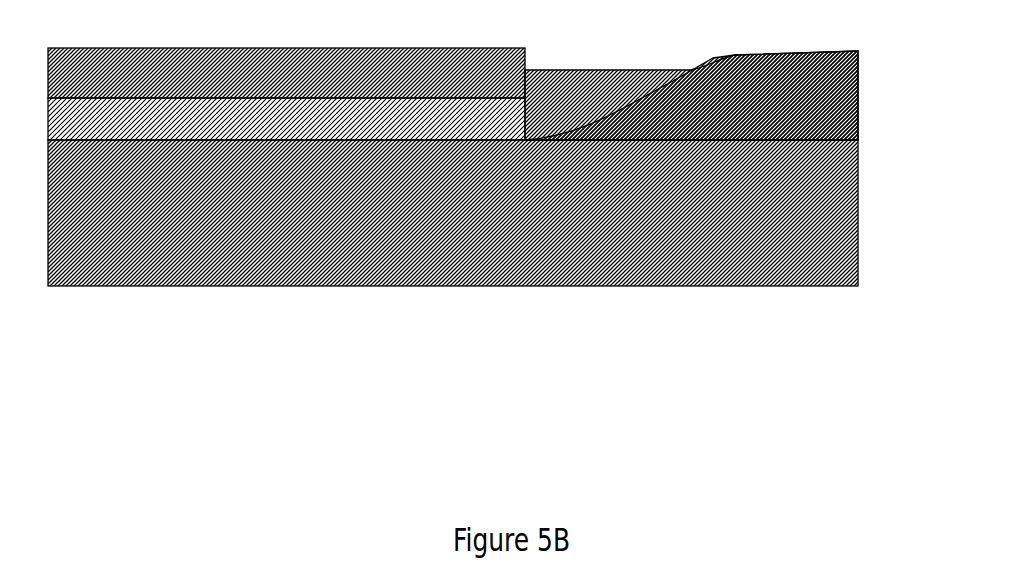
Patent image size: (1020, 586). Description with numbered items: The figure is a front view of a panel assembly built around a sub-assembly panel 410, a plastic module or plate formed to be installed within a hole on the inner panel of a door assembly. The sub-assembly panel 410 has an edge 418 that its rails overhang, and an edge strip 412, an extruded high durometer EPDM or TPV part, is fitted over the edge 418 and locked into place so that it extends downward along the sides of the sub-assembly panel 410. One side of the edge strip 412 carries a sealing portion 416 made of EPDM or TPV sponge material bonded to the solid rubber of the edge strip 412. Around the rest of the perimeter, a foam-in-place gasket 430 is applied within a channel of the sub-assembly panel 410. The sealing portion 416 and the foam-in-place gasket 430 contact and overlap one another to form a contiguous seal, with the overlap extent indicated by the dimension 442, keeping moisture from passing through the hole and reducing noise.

The sub-assembly panel 410 is at (858, 190).
The edge strip 412 is at (157, 48).
The sealing portion 416 is at (350, 88).
The edge 418 is at (583, 70).
The foam-in-place gasket 430 is at (858, 76).
The width dimension 442 is at (518, 237).